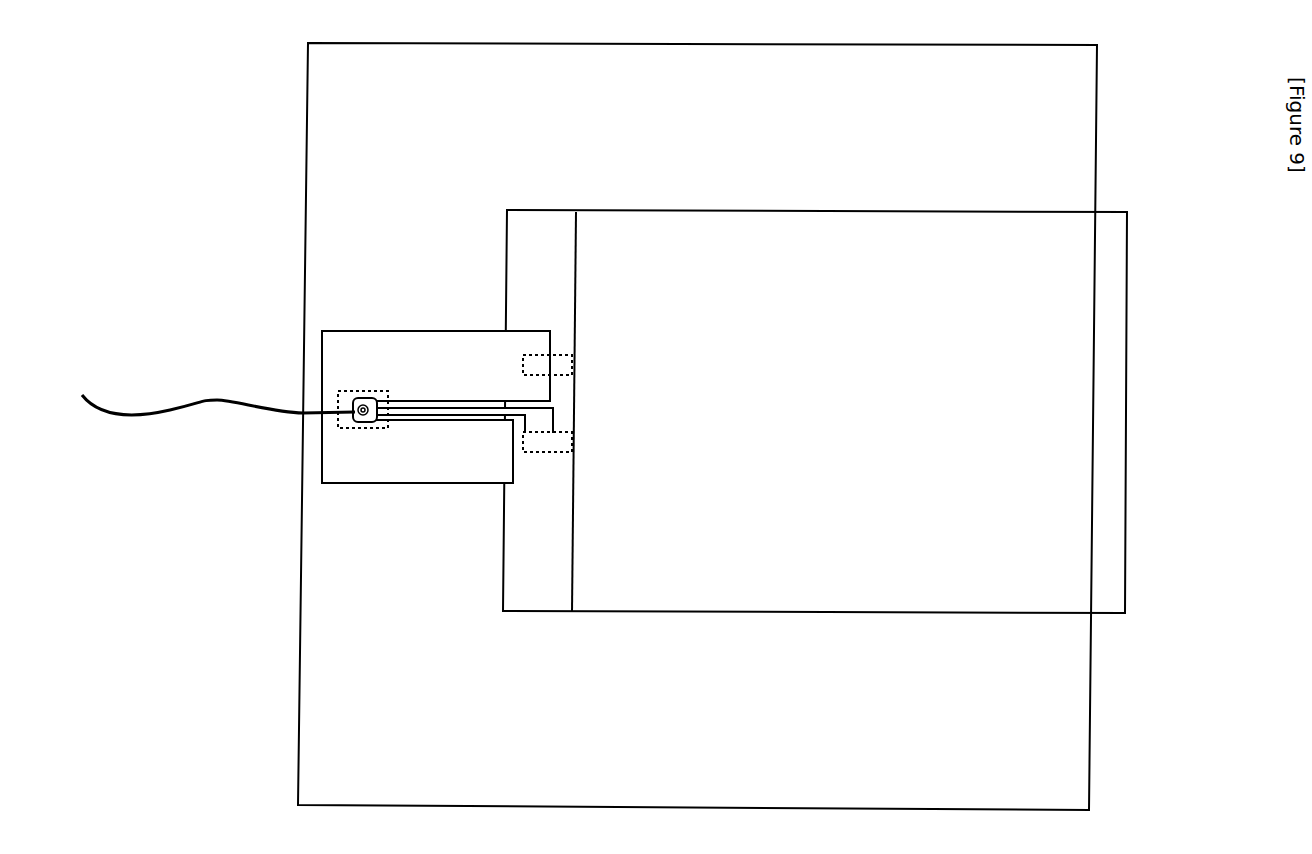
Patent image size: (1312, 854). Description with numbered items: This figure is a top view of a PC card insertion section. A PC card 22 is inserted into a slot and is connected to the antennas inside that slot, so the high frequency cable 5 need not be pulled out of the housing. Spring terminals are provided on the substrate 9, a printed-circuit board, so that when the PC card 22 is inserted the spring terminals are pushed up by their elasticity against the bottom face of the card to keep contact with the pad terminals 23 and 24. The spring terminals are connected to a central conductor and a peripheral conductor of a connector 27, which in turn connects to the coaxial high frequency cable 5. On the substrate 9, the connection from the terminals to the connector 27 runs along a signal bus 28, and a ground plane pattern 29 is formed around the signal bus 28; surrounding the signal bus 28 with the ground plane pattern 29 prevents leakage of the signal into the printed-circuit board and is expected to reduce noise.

The high frequency cable 5 is at (218, 398).
The substrate 9 is at (1085, 135).
The PC card 22 is at (1095, 381).
The pad terminal 23 is at (538, 447).
The pad terminal 24 is at (540, 362).
The connector 27 is at (346, 430).
The signal bus 28 is at (437, 410).
The ground plane pattern 29 is at (366, 345).